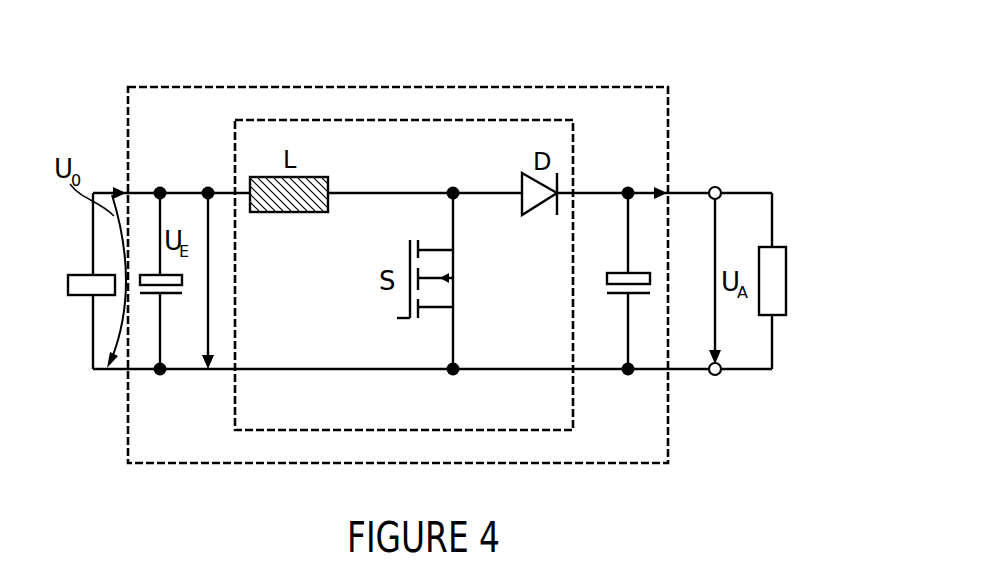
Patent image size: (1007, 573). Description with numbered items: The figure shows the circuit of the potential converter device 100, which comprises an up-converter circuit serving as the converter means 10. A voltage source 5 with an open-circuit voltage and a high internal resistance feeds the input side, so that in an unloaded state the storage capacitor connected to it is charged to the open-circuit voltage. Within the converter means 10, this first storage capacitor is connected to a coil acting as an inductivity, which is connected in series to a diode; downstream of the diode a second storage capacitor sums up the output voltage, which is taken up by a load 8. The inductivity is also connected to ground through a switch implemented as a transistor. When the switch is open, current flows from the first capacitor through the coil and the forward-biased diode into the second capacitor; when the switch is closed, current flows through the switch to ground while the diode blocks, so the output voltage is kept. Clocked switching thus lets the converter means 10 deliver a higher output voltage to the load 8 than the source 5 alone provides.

The potential converter device 100 is at (619, 70).
The converter means 10 is at (575, 165).
The voltage source 5 is at (70, 274).
The load 8 is at (786, 248).